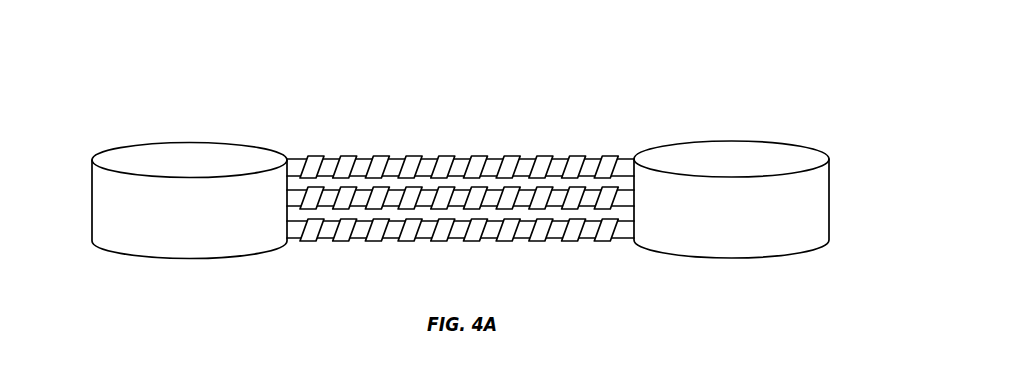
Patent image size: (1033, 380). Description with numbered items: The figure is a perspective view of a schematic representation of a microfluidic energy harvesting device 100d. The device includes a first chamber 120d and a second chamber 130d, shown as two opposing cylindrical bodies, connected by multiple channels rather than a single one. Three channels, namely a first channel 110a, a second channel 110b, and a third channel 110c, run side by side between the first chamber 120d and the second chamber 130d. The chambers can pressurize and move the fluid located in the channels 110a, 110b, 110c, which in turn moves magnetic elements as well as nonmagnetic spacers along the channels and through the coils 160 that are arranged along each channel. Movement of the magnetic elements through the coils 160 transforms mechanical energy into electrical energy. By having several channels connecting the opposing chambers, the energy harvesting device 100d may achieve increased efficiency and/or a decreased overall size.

The energy harvesting device 100d is at (683, 75).
The first channel 110a is at (453, 160).
The second channel 110b is at (627, 197).
The third channel 110c is at (525, 235).
The first chamber 120d is at (105, 243).
The second chamber 130d is at (792, 243).
The coils 160 is at (352, 158).